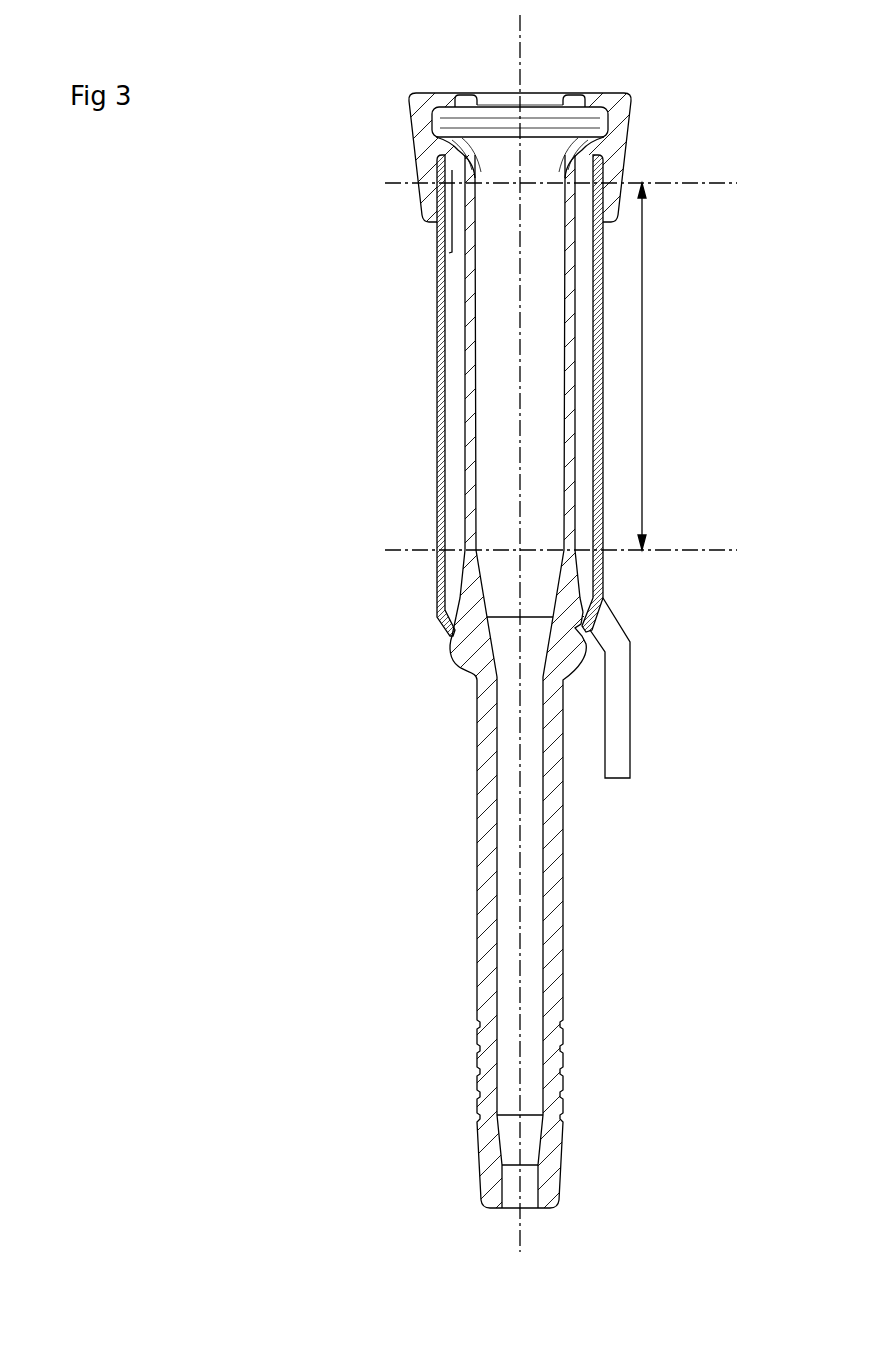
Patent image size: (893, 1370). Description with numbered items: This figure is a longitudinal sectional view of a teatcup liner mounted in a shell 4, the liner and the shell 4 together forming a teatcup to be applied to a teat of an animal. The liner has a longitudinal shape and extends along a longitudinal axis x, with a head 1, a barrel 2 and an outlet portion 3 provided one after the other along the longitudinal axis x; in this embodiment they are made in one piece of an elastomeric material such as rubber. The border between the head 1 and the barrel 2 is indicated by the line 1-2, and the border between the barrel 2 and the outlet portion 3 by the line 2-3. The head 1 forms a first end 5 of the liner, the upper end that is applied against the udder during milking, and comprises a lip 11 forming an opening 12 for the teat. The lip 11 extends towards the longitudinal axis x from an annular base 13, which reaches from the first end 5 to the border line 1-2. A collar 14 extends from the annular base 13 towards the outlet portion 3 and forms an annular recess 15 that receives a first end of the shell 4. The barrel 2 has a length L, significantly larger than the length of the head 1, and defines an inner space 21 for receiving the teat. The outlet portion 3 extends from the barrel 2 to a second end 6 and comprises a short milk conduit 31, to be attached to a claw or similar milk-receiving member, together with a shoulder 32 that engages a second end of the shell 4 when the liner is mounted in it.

The head 1 is at (400, 112).
The barrel 2 is at (459, 362).
The outlet portion 3 is at (469, 772).
The shell 4 is at (438, 448).
The first end 5 is at (424, 93).
The second end 6 is at (497, 1208).
The lip 11 is at (467, 96).
The opening 12 is at (537, 99).
The annular base 13 is at (418, 126).
The collar 14 is at (418, 174).
The annular recess 15 is at (449, 253).
The inner space 21 is at (556, 389).
The short milk conduit 31 is at (483, 897).
The shoulder 32 is at (450, 636).
The longitudinal axis x is at (518, 847).
The length of the barrel L is at (642, 315).
The border line between head and barrel 1-2 is at (678, 182).
The border line between barrel and outlet portion 2-3 is at (678, 548).